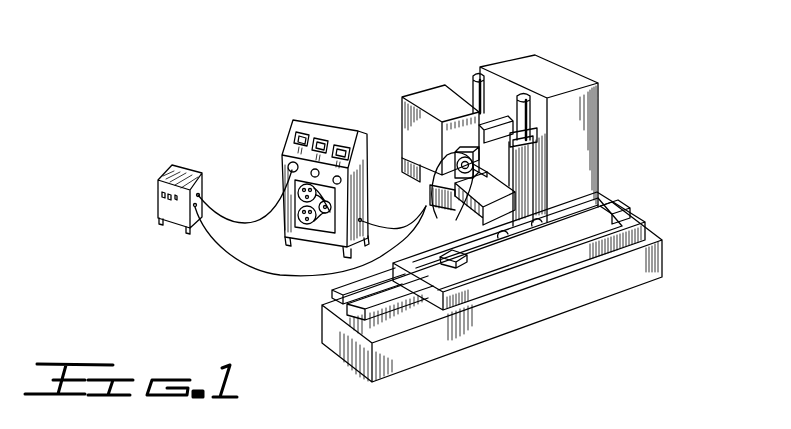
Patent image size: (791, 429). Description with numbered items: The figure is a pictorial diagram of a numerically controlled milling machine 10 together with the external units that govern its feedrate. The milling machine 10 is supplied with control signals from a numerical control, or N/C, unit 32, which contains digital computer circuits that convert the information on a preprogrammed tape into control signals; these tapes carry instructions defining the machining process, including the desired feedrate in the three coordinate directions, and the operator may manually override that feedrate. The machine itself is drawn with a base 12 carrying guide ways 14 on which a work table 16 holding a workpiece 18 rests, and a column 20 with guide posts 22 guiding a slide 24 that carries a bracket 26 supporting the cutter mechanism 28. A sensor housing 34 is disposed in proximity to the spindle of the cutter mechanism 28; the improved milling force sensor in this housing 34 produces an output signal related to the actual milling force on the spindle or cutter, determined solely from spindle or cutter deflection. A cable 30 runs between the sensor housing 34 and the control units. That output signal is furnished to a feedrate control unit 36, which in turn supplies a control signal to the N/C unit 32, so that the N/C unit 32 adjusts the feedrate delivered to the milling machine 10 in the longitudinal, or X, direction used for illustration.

The milling machine 10 is at (632, 151).
The base 12 is at (666, 257).
The guide ways 14 is at (342, 311).
The work table 16 is at (545, 273).
The workpiece 18 is at (560, 213).
The column 20 is at (600, 98).
The guide posts 22 is at (473, 75).
The slide 24 is at (543, 183).
The bracket 26 is at (484, 138).
The cutter mechanism 28 is at (427, 89).
The cable 30 is at (457, 216).
The numerical control unit 32 is at (338, 123).
The sensor housing 34 is at (446, 160).
The feedrate control unit 36 is at (197, 170).